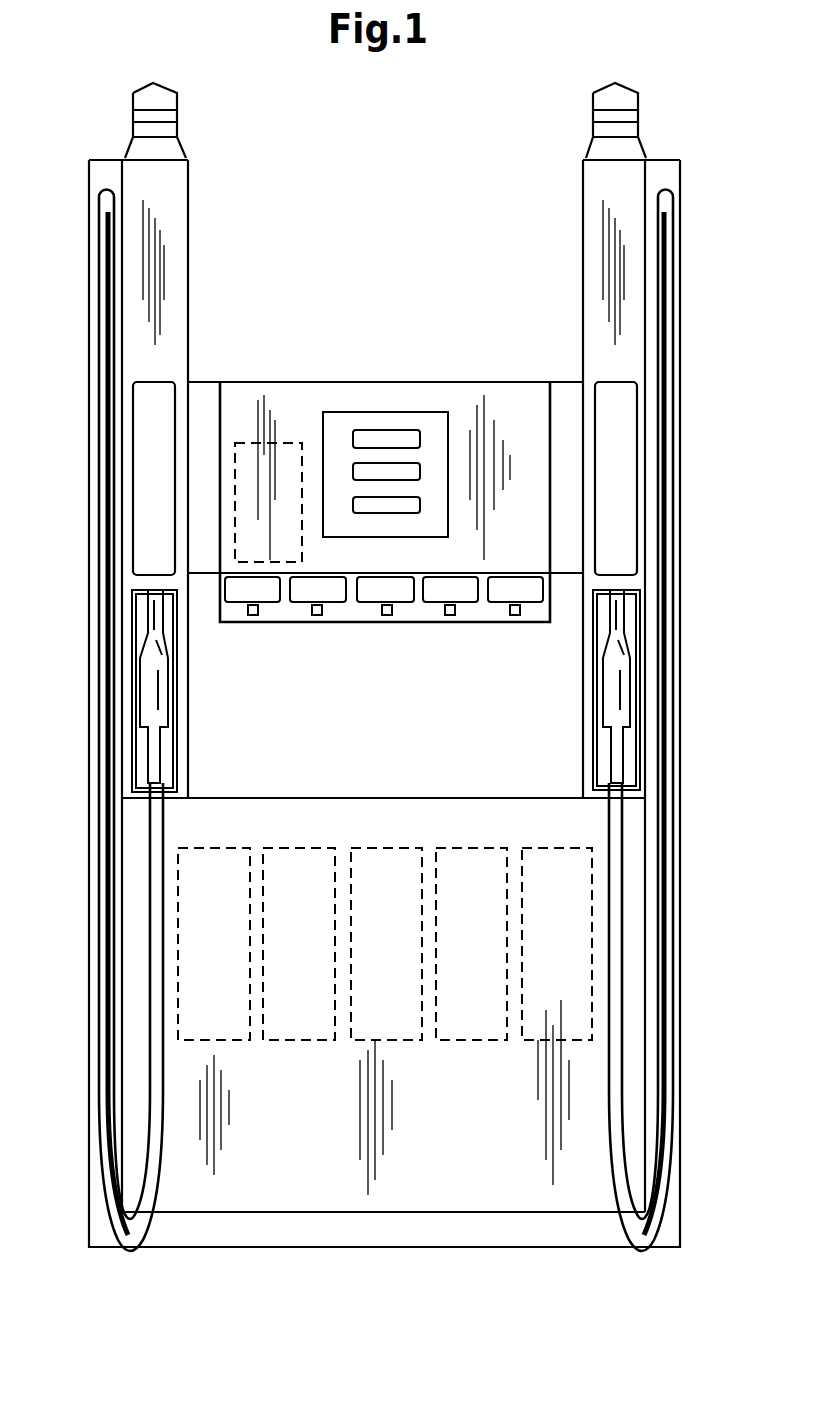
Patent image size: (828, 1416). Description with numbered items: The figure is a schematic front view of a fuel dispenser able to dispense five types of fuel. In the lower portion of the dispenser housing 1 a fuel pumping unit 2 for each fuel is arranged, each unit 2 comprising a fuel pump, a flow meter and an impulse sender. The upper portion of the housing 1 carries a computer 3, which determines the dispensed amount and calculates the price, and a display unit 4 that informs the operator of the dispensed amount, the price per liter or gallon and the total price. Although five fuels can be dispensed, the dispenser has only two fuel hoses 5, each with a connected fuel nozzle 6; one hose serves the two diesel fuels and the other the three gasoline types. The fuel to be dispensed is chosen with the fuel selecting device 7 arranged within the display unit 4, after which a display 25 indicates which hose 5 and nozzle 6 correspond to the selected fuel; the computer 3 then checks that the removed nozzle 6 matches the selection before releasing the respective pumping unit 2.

The dispenser housing 1 is at (500, 400).
The fuel pumping unit 2 is at (228, 1015).
The computer 3 is at (284, 455).
The display unit 4 is at (338, 430).
The fuel hose 5 is at (102, 295).
The fuel nozzle 6 is at (158, 706).
The fuel selecting device 7 is at (387, 632).
The display 25 is at (132, 100).